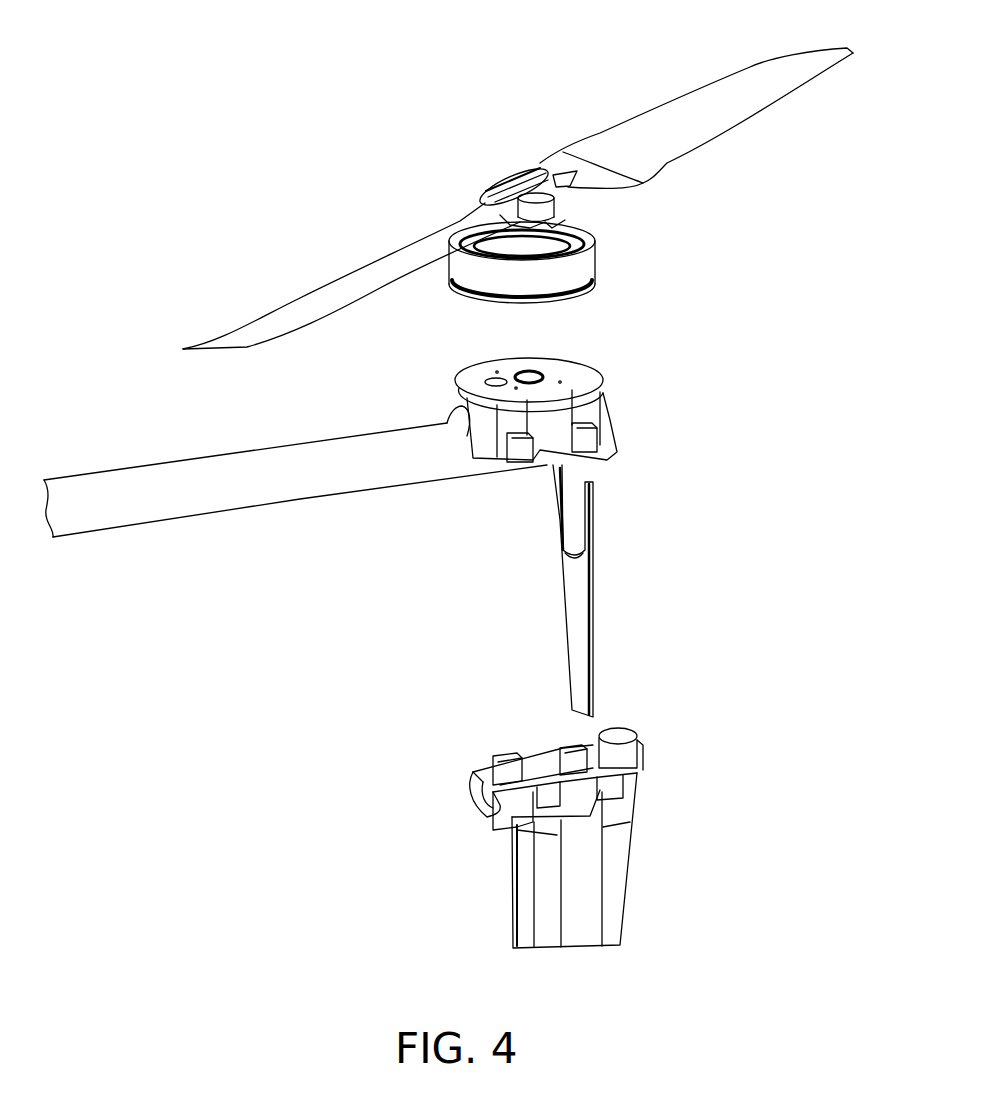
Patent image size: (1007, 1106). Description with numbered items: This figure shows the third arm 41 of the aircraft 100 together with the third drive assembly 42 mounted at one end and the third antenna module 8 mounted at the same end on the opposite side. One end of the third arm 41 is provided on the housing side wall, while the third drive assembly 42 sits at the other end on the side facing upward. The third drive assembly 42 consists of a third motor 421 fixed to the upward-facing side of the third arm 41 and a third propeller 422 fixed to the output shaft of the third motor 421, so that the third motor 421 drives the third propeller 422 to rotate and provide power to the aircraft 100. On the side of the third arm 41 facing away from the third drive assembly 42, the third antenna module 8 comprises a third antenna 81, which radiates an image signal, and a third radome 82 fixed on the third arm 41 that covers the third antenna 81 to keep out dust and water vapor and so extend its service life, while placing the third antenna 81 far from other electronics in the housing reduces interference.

The aircraft 100 is at (262, 210).
The third arm 41 is at (567, 422).
The third drive assembly 42 is at (730, 243).
The third motor 421 is at (600, 268).
The third propeller 422 is at (650, 167).
The third antenna module 8 is at (690, 550).
The third antenna 81 is at (585, 580).
The third radome 82 is at (630, 735).